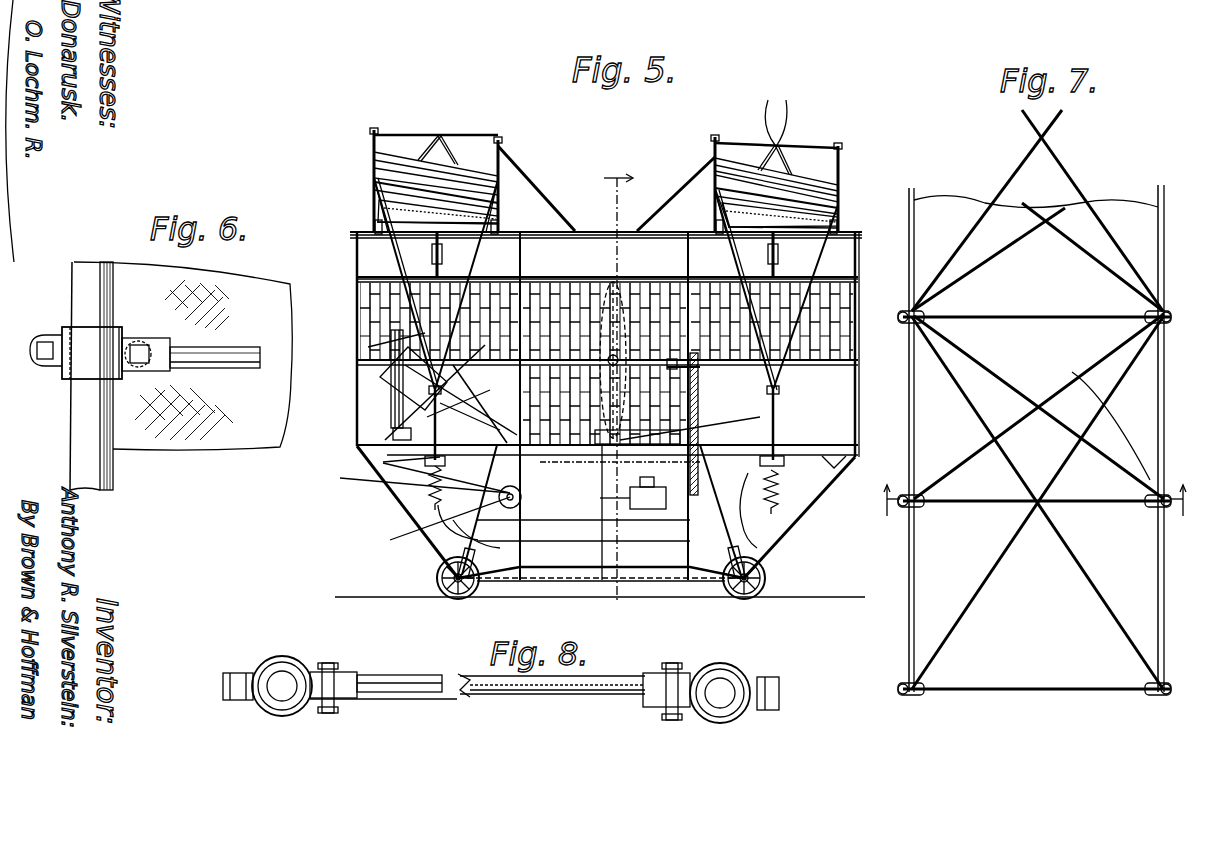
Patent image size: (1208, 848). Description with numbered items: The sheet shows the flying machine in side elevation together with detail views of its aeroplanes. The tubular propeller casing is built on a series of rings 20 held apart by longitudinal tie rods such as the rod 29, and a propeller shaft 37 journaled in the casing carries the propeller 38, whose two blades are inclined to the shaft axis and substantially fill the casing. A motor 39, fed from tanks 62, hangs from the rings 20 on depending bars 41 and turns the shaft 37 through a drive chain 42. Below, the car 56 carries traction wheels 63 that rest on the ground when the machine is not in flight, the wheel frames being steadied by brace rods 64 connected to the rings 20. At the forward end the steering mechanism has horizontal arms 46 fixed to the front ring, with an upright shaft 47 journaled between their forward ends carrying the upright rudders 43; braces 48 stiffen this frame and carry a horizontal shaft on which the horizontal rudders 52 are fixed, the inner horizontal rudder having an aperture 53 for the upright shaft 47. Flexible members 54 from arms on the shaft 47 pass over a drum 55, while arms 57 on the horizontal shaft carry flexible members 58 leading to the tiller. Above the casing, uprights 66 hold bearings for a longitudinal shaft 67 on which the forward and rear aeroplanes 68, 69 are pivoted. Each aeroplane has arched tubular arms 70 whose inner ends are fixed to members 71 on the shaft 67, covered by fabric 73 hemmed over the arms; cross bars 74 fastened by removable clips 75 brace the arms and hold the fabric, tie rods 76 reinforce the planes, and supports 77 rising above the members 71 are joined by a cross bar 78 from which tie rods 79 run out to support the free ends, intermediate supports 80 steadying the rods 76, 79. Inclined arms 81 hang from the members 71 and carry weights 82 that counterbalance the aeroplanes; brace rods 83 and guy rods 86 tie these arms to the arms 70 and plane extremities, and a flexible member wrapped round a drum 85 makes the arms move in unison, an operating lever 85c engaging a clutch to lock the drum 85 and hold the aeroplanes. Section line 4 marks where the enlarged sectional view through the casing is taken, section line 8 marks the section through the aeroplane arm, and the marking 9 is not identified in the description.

In FIG. 5, the section line 4 is at (618, 376).
In FIG. 7, the section line 8 is at (1033, 500).
In FIG. 5, the bracket 9 is at (711, 258).
In FIG. 5, the ring 20 is at (857, 393).
In FIG. 5, the tie rod 29 is at (832, 462).
In FIG. 5, the propeller shaft 37 is at (699, 379).
In FIG. 5, the propeller 38 is at (622, 285).
In FIG. 5, the motor 39 is at (650, 495).
In FIG. 5, the depending bars or rods 41 is at (625, 486).
In FIG. 5, the drive chain 42 is at (690, 440).
In FIG. 5, the upright aeroplanes or rudders 43 is at (420, 275).
In FIG. 5, the horizontal arms 46 is at (473, 440).
In FIG. 5, the upright shaft 47 is at (383, 462).
In FIG. 5, the braces 48 is at (470, 390).
In FIG. 5, the horizontal aeroplanes or rudders 52 is at (368, 347).
In FIG. 5, the aperture or opening 53 is at (400, 473).
In FIG. 5, the flexible members 54 is at (425, 530).
In FIG. 5, the drum 55 is at (522, 495).
In FIG. 5, the car 56 is at (648, 570).
In FIG. 5, the arms 57 is at (380, 377).
In FIG. 5, the flexible members 58 is at (420, 418).
In FIG. 5, the tanks 62 is at (699, 413).
In FIG. 5, the traction wheels 63 is at (450, 598).
In FIG. 5, the brace rods 64 is at (400, 517).
In FIG. 5, the uprights 66 is at (355, 248).
In FIG. 5, the shaft 67 is at (582, 232).
In FIG. 5, the aeroplane 68 is at (395, 170).
In FIG. 5, the aeroplane 69 is at (728, 170).
In FIG. 5, the arms or members 70 is at (378, 188).
In FIG. 6, the arms or members 70 is at (84, 467).
In FIG. 7, the arms or members 70 is at (914, 192).
In FIG. 8, the arms or members 70 is at (284, 690).
In FIG. 5, the member 71 is at (375, 228).
In FIG. 8, the member 71 is at (502, 696).
In FIG. 5, the fabric 73 is at (480, 178).
In FIG. 6, the fabric 73 is at (183, 430).
In FIG. 7, the fabric 73 is at (1142, 450).
In FIG. 8, the fabric 73 is at (572, 696).
In FIG. 5, the cross bars or rods 74 is at (390, 193).
In FIG. 6, the cross bars or rods 74 is at (248, 355).
In FIG. 7, the cross bars or rods 74 is at (1088, 313).
In FIG. 6, the clips 75 is at (108, 348).
In FIG. 7, the clips 75 is at (901, 321).
In FIG. 8, the clips 75 is at (285, 660).
In FIG. 7, the tie rods 76 is at (1100, 402).
In FIG. 5, the supports 77 is at (373, 136).
In FIG. 5, the cross bar or rod 78 is at (405, 138).
In FIG. 5, the tie rods 79 is at (778, 115).
In FIG. 7, the tie rods 79 is at (1032, 160).
In FIG. 5, the intermediate supports 80 is at (470, 412).
In FIG. 5, the arms or bars 81 is at (440, 262).
In FIG. 5, the weights 82 is at (425, 490).
In FIG. 5, the brace rods 83 is at (395, 256).
In FIG. 5, the drum 85 is at (373, 500).
In FIG. 5, the operating lever 85c is at (610, 538).
In FIG. 5, the guy rods 86 is at (760, 417).